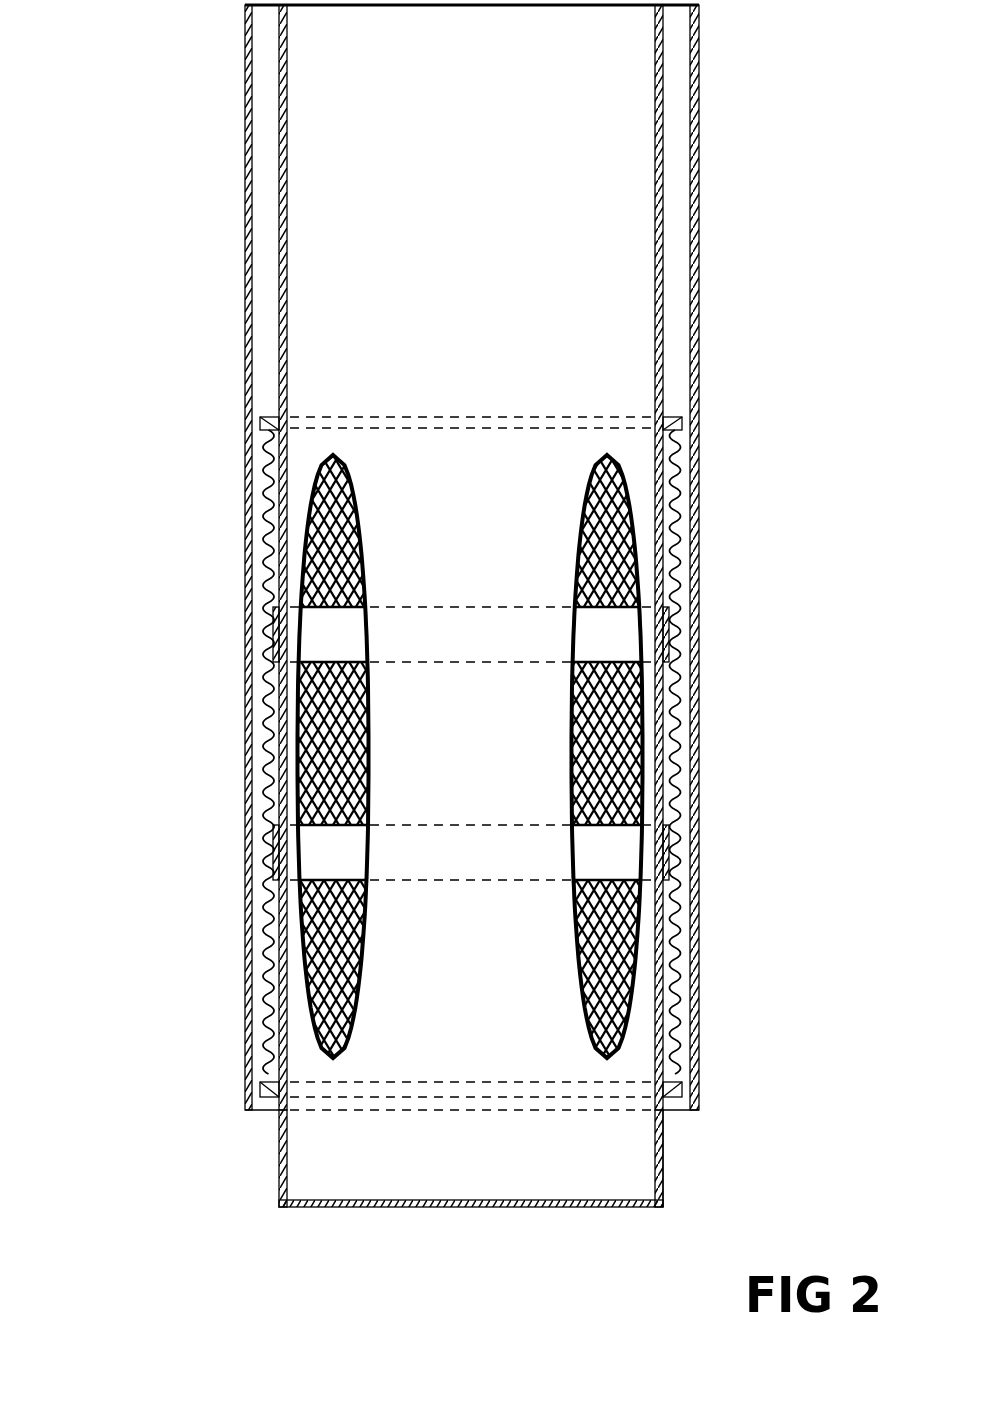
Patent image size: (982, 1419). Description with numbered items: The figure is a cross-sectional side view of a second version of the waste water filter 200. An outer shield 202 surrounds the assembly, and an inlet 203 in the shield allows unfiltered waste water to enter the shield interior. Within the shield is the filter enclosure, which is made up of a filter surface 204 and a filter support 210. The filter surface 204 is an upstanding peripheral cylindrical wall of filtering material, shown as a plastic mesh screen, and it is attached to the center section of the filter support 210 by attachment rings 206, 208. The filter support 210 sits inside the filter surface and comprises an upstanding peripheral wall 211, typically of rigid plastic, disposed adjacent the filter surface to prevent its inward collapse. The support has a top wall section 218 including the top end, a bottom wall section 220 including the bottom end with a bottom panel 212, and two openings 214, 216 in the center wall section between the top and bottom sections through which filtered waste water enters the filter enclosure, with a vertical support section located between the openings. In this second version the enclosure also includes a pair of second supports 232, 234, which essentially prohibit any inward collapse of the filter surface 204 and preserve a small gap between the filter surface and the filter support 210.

The waste water filter 200 is at (183, 616).
The shield 202 is at (705, 262).
The inlet 203 is at (683, 1123).
The filter surface 204 is at (680, 490).
The attachment ring 206 is at (690, 408).
The attachment ring 208 is at (678, 1092).
The filter support 210 is at (620, 237).
The peripheral wall 211 is at (660, 578).
The bottom panel 212 is at (545, 1215).
The opening 214 is at (625, 1020).
The opening 216 is at (320, 985).
The top wall section 218 is at (272, 338).
The bottom wall section 220 is at (270, 1150).
The second support 232 is at (680, 640).
The second support 234 is at (670, 860).